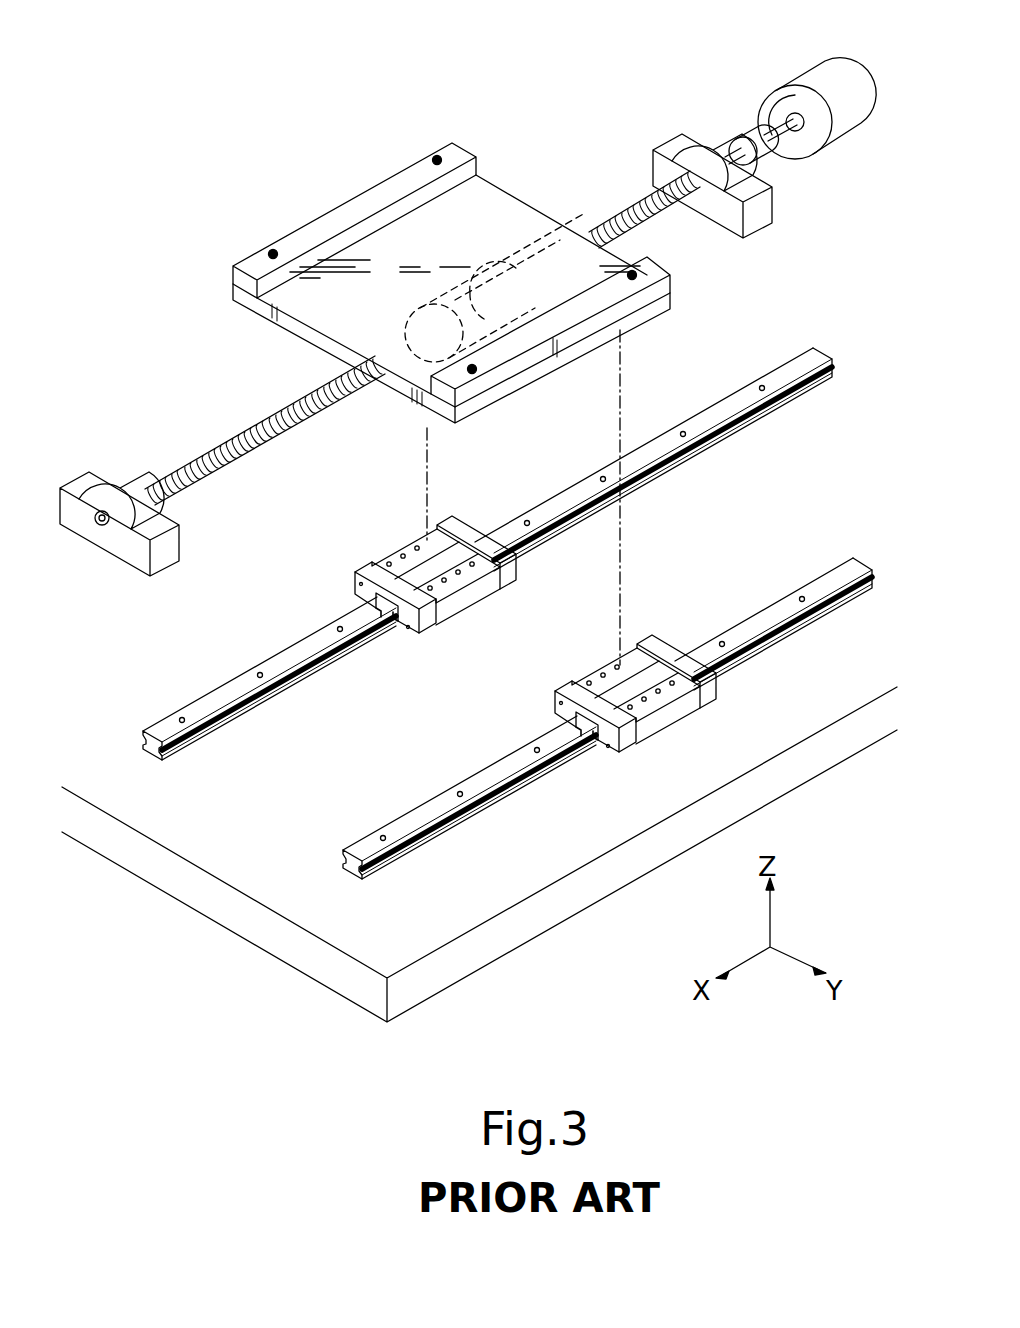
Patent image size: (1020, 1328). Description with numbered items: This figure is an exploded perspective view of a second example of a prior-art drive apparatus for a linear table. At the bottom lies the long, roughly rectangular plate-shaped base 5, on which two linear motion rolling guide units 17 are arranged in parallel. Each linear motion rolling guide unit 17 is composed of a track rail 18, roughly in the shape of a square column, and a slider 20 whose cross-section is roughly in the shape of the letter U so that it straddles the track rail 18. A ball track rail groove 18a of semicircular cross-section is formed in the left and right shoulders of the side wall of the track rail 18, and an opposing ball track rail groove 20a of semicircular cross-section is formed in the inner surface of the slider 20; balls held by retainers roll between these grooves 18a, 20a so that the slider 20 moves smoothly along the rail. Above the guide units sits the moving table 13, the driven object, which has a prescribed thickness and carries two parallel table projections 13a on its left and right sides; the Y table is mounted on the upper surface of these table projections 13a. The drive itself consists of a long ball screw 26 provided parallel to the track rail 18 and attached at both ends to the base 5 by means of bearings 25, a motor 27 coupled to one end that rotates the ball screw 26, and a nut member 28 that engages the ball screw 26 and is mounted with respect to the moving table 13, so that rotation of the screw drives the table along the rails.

The base 5 is at (572, 897).
The moving table 13 is at (464, 251).
The table projections 13a is at (301, 238).
The linear motion rolling guide unit 17 is at (507, 626).
The track rail 18 is at (507, 626).
The ball track rail groove 18a is at (337, 640).
The slider 20 is at (535, 664).
The ball track rail groove 20a is at (393, 624).
The bearings 25 is at (128, 493).
The ball screw 26 is at (218, 450).
The motor 27 is at (814, 93).
The nut member 28 is at (482, 268).